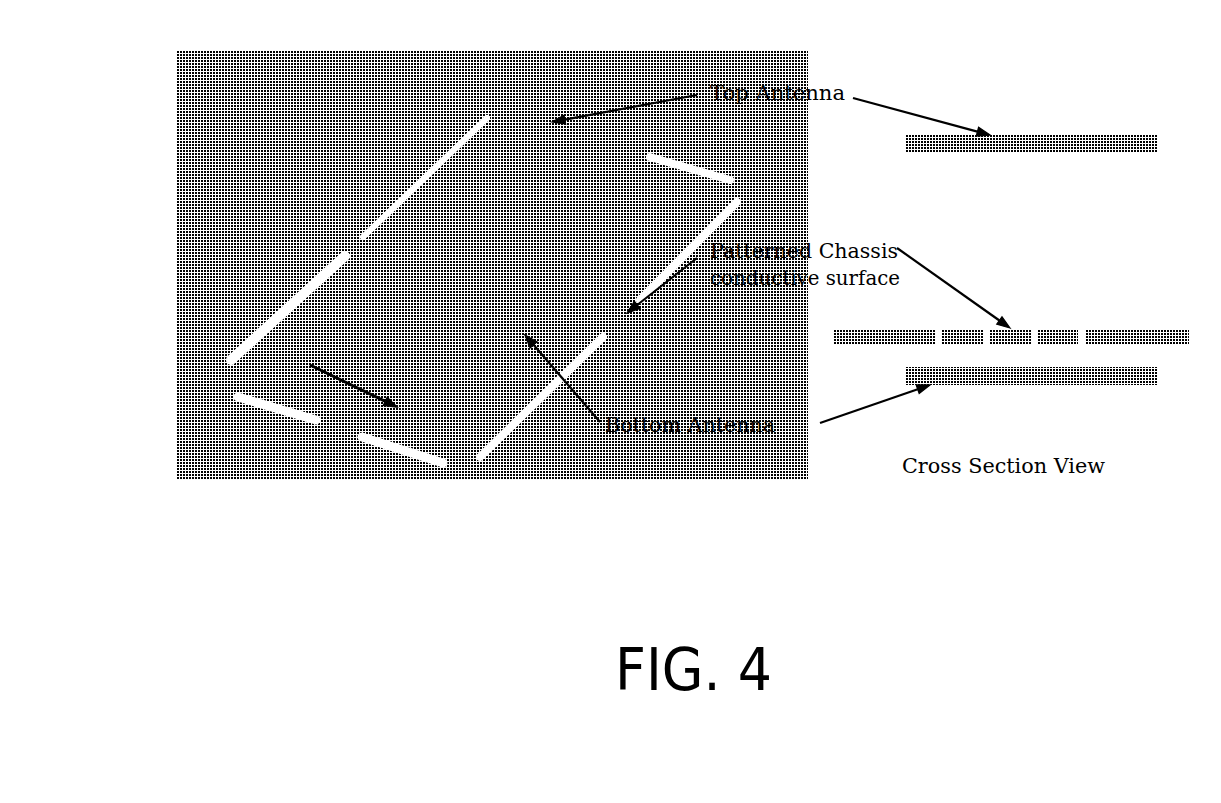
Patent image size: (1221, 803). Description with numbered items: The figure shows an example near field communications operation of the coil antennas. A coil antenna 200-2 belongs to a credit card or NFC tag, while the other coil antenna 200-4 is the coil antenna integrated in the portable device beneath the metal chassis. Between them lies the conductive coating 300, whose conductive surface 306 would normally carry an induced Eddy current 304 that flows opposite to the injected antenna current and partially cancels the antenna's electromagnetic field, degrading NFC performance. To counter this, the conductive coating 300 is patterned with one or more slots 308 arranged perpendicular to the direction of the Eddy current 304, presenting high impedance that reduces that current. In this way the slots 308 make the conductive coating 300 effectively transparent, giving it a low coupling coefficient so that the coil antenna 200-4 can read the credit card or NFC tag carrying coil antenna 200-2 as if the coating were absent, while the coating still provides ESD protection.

The conductive coating 300 is at (217, 100).
The coil antenna 200-2 is at (397, 175).
The coil antenna 200-4 is at (593, 277).
The Eddy current 304 is at (353, 393).
The conductive surface 306 is at (333, 283).
The slots 308 is at (253, 385).